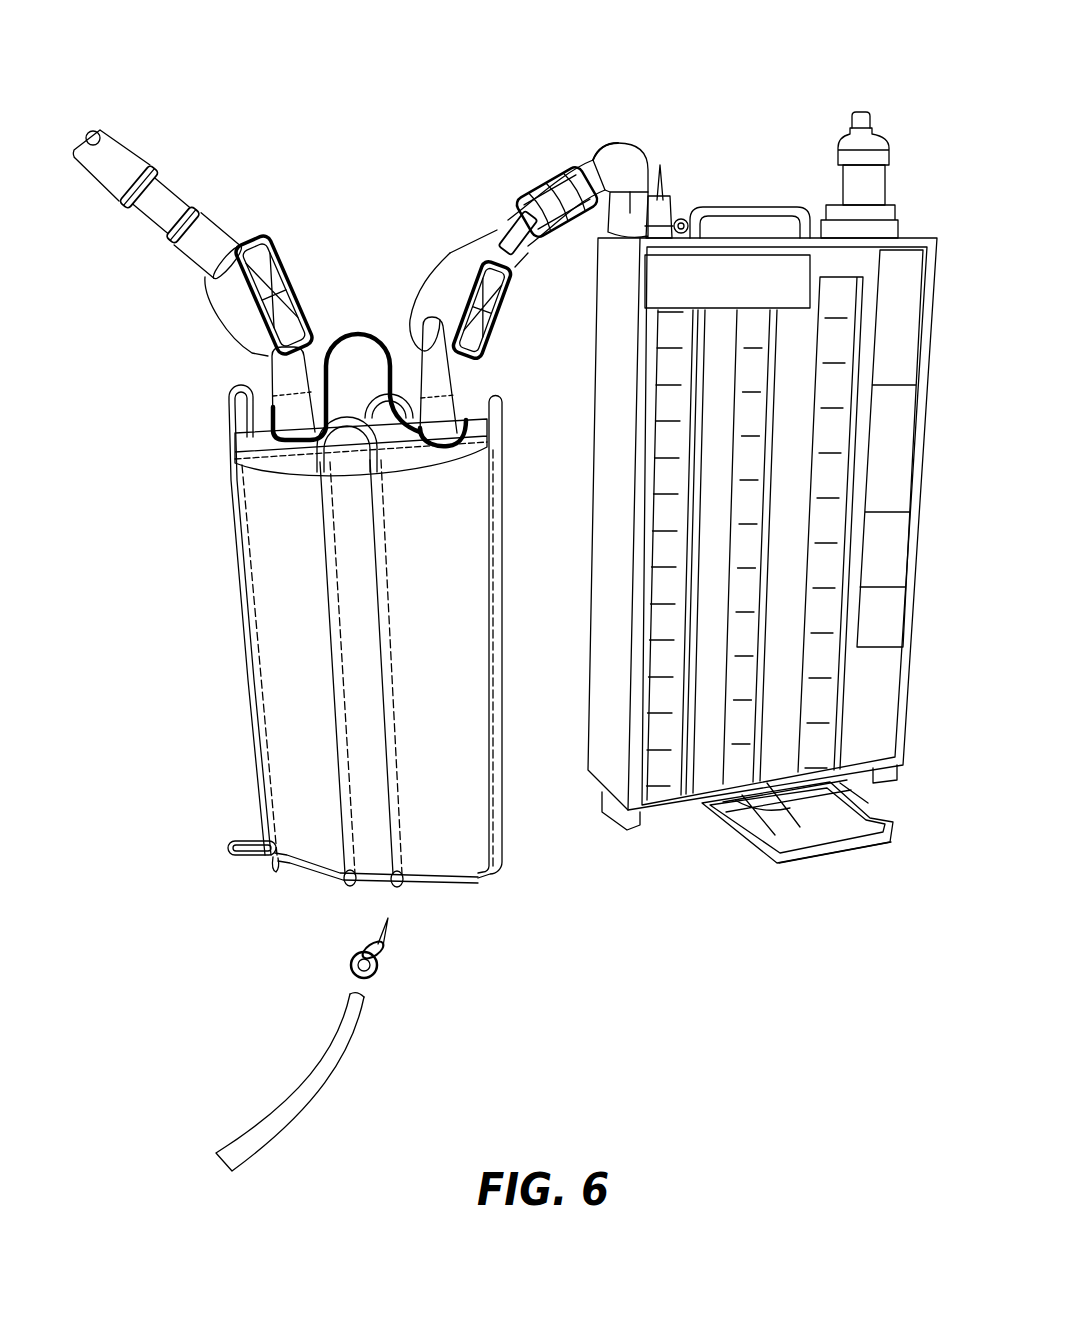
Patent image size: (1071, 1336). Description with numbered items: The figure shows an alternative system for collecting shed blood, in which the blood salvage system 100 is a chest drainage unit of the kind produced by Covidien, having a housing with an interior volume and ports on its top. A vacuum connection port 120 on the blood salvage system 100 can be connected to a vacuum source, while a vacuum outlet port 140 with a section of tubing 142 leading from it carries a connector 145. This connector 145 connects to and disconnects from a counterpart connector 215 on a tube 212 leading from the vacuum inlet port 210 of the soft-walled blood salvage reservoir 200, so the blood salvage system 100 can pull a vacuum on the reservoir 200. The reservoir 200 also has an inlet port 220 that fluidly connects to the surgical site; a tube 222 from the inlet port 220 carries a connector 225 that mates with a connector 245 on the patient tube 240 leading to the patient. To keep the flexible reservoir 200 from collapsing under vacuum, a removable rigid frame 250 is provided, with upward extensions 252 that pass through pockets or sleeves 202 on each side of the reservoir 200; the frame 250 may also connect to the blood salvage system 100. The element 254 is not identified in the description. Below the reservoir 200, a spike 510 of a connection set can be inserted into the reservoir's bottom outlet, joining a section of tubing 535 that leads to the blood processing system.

The blood salvage system 100 is at (893, 445).
The vacuum connection port 120 is at (847, 185).
The vacuum outlet port 140 is at (630, 205).
The section of tubing 142 is at (600, 157).
The connector 145 is at (540, 187).
The connector 215 is at (507, 213).
The tube 212 is at (440, 372).
The vacuum inlet port 210 is at (450, 410).
The extensions 252 is at (232, 392).
The removable rigid frame 250 is at (310, 467).
The inlet port 220 is at (290, 398).
The tube 222 is at (247, 358).
The connector 225 is at (200, 248).
The connector 245 is at (153, 175).
The patient tube 240 is at (117, 153).
The blood salvage reservoir 200 is at (283, 652).
The pockets/sleeves 202 is at (485, 803).
The hook 254 is at (240, 853).
The spike 510 is at (353, 958).
The section of tubing 535 is at (283, 1117).